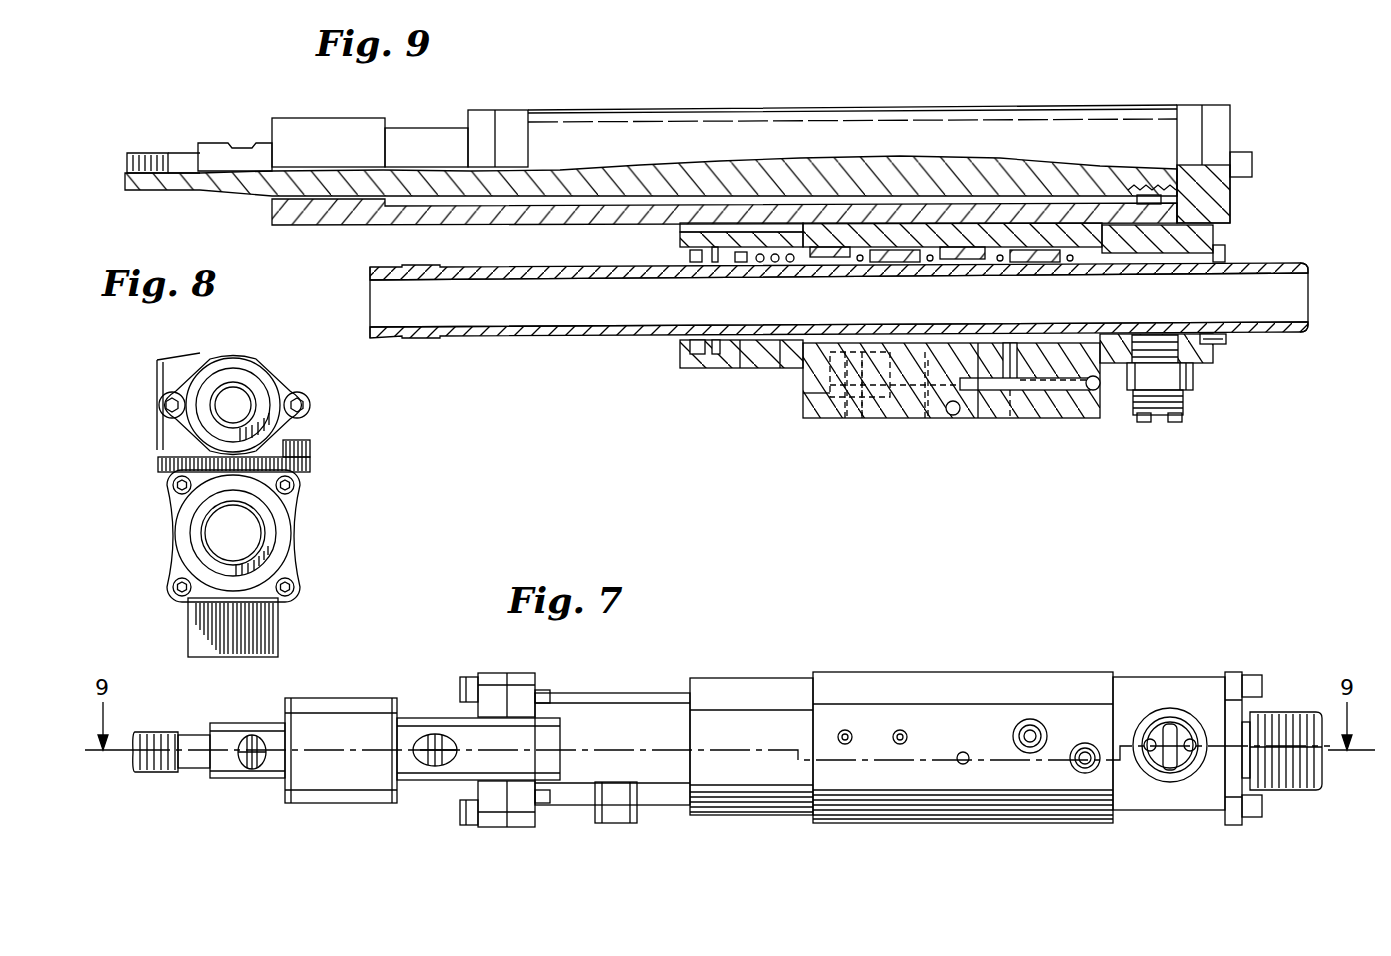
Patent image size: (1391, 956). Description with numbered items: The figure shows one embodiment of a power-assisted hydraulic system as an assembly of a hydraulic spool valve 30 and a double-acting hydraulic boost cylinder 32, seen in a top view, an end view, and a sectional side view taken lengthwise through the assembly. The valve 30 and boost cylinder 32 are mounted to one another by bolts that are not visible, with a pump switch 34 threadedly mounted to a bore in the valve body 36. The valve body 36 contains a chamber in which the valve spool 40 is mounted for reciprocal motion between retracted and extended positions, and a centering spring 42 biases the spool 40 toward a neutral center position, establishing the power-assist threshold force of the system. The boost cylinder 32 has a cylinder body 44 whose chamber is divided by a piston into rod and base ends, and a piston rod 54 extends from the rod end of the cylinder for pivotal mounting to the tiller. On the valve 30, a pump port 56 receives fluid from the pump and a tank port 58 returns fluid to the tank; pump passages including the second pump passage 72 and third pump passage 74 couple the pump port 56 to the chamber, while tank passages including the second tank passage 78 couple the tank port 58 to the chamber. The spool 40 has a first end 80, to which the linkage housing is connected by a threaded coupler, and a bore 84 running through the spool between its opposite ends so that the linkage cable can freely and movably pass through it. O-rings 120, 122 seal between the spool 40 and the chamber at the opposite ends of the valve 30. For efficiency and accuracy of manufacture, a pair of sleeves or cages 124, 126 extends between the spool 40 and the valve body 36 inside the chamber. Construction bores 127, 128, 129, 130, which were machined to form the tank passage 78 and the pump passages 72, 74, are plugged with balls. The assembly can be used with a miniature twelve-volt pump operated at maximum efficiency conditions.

In FIG. 9, the hydraulic spool valve 30 is at (808, 428).
In FIG. 8, the hydraulic spool valve 30 is at (300, 521).
In FIG. 7, the hydraulic spool valve 30 is at (888, 823).
In FIG. 9, the double-acting hydraulic boost cylinder 32 is at (553, 112).
In FIG. 8, the double-acting hydraulic boost cylinder 32 is at (303, 383).
In FIG. 7, the double-acting hydraulic boost cylinder 32 is at (316, 806).
In FIG. 9, the pump switch 34 is at (1192, 420).
In FIG. 7, the pump switch 34 is at (1152, 770).
In FIG. 9, the valve body 36 is at (1225, 240).
In FIG. 8, the valve body 36 is at (272, 628).
In FIG. 7, the valve body 36 is at (737, 812).
In FIG. 9, the valve spool 40 is at (492, 340).
In FIG. 8, the valve spool 40 is at (257, 548).
In FIG. 7, the valve spool 40 is at (1280, 723).
In FIG. 9, the centering spring 42 is at (750, 345).
In FIG. 9, the cylinder body 44 is at (672, 118).
In FIG. 8, the cylinder body 44 is at (305, 432).
In FIG. 7, the cylinder body 44 is at (358, 722).
In FIG. 9, the piston rod 54 is at (216, 148).
In FIG. 8, the piston rod 54 is at (220, 388).
In FIG. 7, the piston rod 54 is at (183, 772).
In FIG. 9, the pump port 56 is at (1010, 400).
In FIG. 7, the pump port 56 is at (1040, 719).
In FIG. 9, the tank port 58 is at (1085, 418).
In FIG. 7, the tank port 58 is at (1085, 743).
In FIG. 9, the second pump passage 72 is at (862, 420).
In FIG. 9, the third pump passage 74 is at (800, 393).
In FIG. 9, the second tank passage 78 is at (952, 412).
In FIG. 9, the first end of valve spool 80 is at (1282, 265).
In FIG. 7, the first end of valve spool 80 is at (1297, 780).
In FIG. 9, the bore 84 is at (393, 303).
In FIG. 9, the O-ring 120 is at (1215, 338).
In FIG. 9, the O-ring 122 is at (685, 347).
In FIG. 9, the sleeve or cage 124 is at (978, 414).
In FIG. 9, the sleeve or cage 126 is at (790, 370).
In FIG. 9, the construction bore 127 is at (1020, 415).
In FIG. 9, the construction bore 128 is at (975, 420).
In FIG. 7, the construction bore 128 is at (966, 752).
In FIG. 9, the construction bore 129 is at (928, 420).
In FIG. 7, the construction bore 129 is at (900, 729).
In FIG. 9, the construction bore 130 is at (847, 420).
In FIG. 7, the construction bore 130 is at (846, 729).